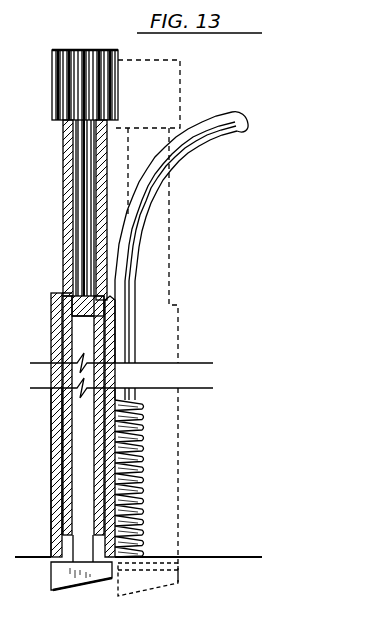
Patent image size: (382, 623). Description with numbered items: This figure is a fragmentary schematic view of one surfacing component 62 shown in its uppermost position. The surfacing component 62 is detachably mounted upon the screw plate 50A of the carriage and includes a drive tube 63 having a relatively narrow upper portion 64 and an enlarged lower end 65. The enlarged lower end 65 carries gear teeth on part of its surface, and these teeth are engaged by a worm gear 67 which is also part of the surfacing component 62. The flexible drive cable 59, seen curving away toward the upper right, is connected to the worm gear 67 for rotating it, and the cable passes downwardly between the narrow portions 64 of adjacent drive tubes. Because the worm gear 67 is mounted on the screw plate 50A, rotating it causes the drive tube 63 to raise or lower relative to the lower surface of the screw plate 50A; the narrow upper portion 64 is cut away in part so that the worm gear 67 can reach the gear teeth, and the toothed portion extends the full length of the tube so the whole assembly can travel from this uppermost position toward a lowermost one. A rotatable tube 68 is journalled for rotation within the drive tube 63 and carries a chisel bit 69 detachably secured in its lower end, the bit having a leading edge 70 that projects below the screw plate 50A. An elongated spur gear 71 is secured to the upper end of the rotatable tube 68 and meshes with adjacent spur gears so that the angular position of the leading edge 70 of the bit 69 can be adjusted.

The elongated spur gear 71 is at (52, 100).
The narrow upper portion 64 is at (63, 170).
The surfacing component 62 is at (52, 244).
The drive tube 63 is at (51, 318).
The enlarged lower end 65 is at (50, 440).
The rotatable tube 68 is at (63, 468).
The worm gear 67 is at (142, 460).
The flexible drive cable 59 is at (228, 137).
The screw plate 50A is at (211, 557).
The chisel bit 69 is at (51, 581).
The leading edge 70 is at (50, 591).